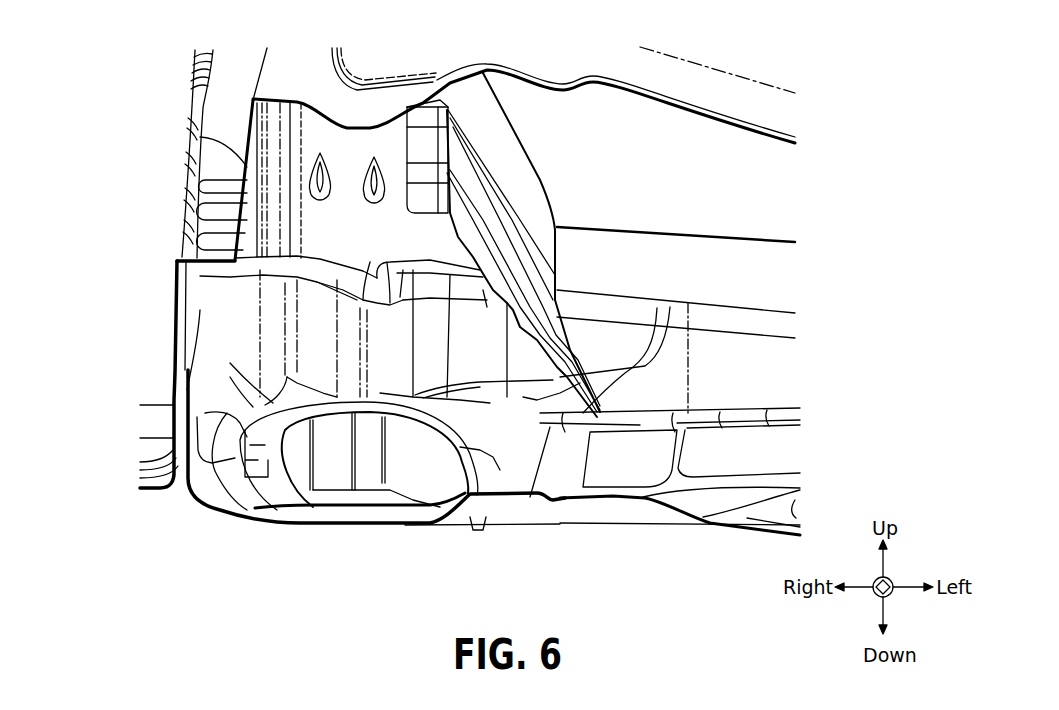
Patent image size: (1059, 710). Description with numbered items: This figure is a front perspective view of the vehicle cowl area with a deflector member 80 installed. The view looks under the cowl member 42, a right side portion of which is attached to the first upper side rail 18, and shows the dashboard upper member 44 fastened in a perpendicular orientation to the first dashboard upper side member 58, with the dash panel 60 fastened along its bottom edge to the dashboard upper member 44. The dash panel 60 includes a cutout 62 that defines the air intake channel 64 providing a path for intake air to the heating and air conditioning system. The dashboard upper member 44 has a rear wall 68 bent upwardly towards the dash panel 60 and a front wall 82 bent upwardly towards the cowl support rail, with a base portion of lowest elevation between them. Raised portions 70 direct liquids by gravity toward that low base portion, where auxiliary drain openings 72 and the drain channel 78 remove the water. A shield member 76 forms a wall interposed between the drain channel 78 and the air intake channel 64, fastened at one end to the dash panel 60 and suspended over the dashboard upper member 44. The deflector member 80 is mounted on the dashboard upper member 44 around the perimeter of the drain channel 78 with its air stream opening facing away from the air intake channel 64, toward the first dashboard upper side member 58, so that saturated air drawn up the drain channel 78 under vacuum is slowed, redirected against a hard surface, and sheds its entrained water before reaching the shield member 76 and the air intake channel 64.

The first upper side rail 18 is at (224, 73).
The cowl member 42 is at (730, 82).
The dashboard upper member 44 is at (792, 413).
The first dashboard upper side member 58 is at (185, 350).
The dash panel 60 is at (297, 123).
The cutout 62 is at (777, 273).
The air intake channel 64 is at (770, 175).
The rear wall 68 is at (247, 312).
The raised portions 70 is at (777, 450).
The auxiliary drain openings 72 is at (205, 413).
The shield member 76 is at (542, 190).
The drain channel 78 is at (280, 490).
The deflector member 80 is at (423, 485).
The front wall 82 is at (610, 510).